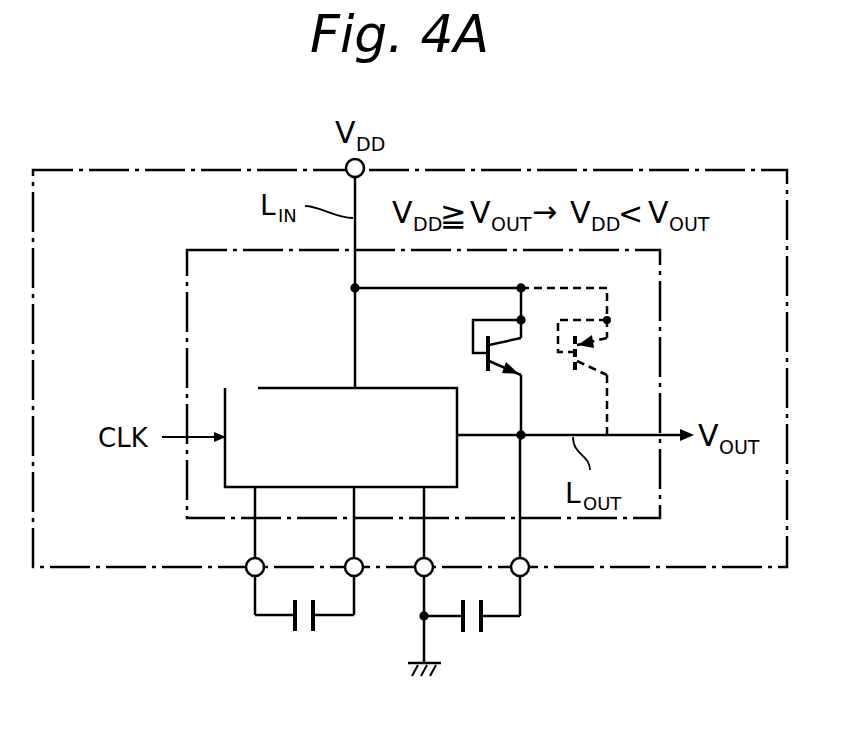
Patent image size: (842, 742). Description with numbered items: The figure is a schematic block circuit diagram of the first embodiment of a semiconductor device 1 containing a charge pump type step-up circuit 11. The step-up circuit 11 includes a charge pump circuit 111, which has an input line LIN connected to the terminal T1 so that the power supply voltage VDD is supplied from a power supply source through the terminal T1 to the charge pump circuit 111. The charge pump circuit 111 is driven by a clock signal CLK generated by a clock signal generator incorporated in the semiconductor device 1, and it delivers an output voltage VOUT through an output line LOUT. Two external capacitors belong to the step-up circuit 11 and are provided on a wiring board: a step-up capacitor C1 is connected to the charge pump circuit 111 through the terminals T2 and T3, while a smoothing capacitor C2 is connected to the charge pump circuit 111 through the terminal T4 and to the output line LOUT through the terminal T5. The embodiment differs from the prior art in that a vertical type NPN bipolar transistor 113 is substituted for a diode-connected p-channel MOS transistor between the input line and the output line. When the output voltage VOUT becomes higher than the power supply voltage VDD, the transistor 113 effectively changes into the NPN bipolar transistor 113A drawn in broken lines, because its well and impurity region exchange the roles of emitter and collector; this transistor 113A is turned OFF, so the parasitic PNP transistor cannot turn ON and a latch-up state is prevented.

The semiconductor device 1 is at (573, 160).
The charge pump type step-up circuit 11 is at (178, 320).
The charge pump circuit 111 is at (266, 386).
The vertical type NPN bipolar transistor 113 is at (466, 339).
The NPN bipolar transistor 113A is at (625, 340).
The terminal T1 is at (365, 166).
The terminal T2 is at (247, 580).
The terminal T3 is at (347, 561).
The terminal T4 is at (432, 562).
The terminal T5 is at (528, 574).
The step-up capacitor C1 is at (318, 622).
The smoothing capacitor C2 is at (485, 622).